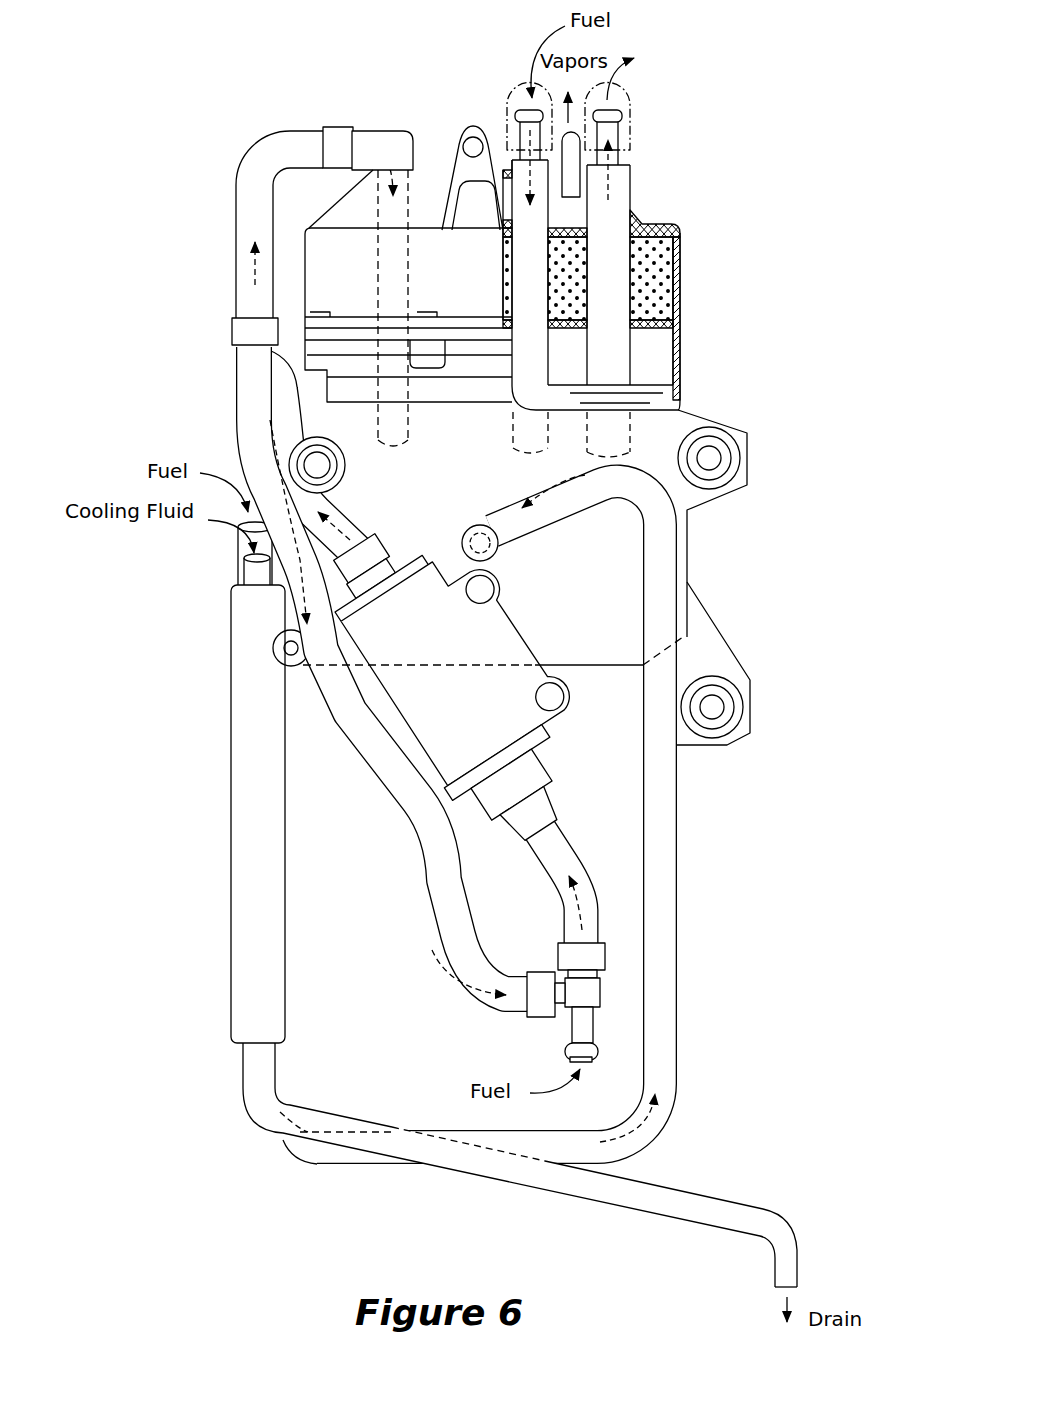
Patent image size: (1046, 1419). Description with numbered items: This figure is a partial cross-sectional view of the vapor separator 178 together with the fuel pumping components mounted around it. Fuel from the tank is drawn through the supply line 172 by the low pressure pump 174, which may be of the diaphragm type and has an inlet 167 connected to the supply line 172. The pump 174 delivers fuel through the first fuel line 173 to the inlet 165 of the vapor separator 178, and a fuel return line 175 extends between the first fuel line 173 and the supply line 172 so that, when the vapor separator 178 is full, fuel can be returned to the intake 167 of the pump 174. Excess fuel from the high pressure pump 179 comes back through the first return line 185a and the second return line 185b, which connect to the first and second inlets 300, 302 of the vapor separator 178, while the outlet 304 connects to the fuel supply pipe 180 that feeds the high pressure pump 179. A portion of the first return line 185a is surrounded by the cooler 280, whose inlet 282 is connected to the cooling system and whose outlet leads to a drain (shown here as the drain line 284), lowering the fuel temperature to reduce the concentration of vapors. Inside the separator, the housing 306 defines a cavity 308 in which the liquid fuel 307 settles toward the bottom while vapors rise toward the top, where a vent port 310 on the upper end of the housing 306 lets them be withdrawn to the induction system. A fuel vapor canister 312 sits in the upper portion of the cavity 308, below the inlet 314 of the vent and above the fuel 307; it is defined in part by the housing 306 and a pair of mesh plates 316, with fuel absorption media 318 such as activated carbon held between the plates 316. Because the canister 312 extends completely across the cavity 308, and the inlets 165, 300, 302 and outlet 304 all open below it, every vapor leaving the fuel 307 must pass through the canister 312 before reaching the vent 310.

The inlet 165 is at (385, 131).
The inlet 167 is at (560, 820).
The supply line 172 is at (592, 878).
The first fuel line 173 is at (236, 276).
The low pressure pump 174 is at (530, 642).
The fuel return line 175 is at (368, 764).
The vapor separator 178 is at (691, 533).
The high pressure pump 179 is at (671, 67).
The fuel supply pipe 180 is at (632, 105).
The first return line 185a is at (238, 547).
The second return line 185b is at (507, 100).
The cooler 280 is at (233, 737).
The inlet 282 is at (240, 578).
The drain line 284 is at (267, 1143).
The first inlet 300 is at (503, 555).
The second inlet 302 is at (519, 133).
The outlet 304 is at (622, 137).
The housing 306 is at (683, 280).
The fuel 307 is at (657, 400).
The cavity 308 is at (568, 373).
The vent port 310 is at (580, 183).
The fuel vapor canister 312 is at (686, 262).
The inlet 314 is at (575, 215).
The mesh plates 316 is at (680, 228).
The fuel absorption media 318 is at (663, 307).